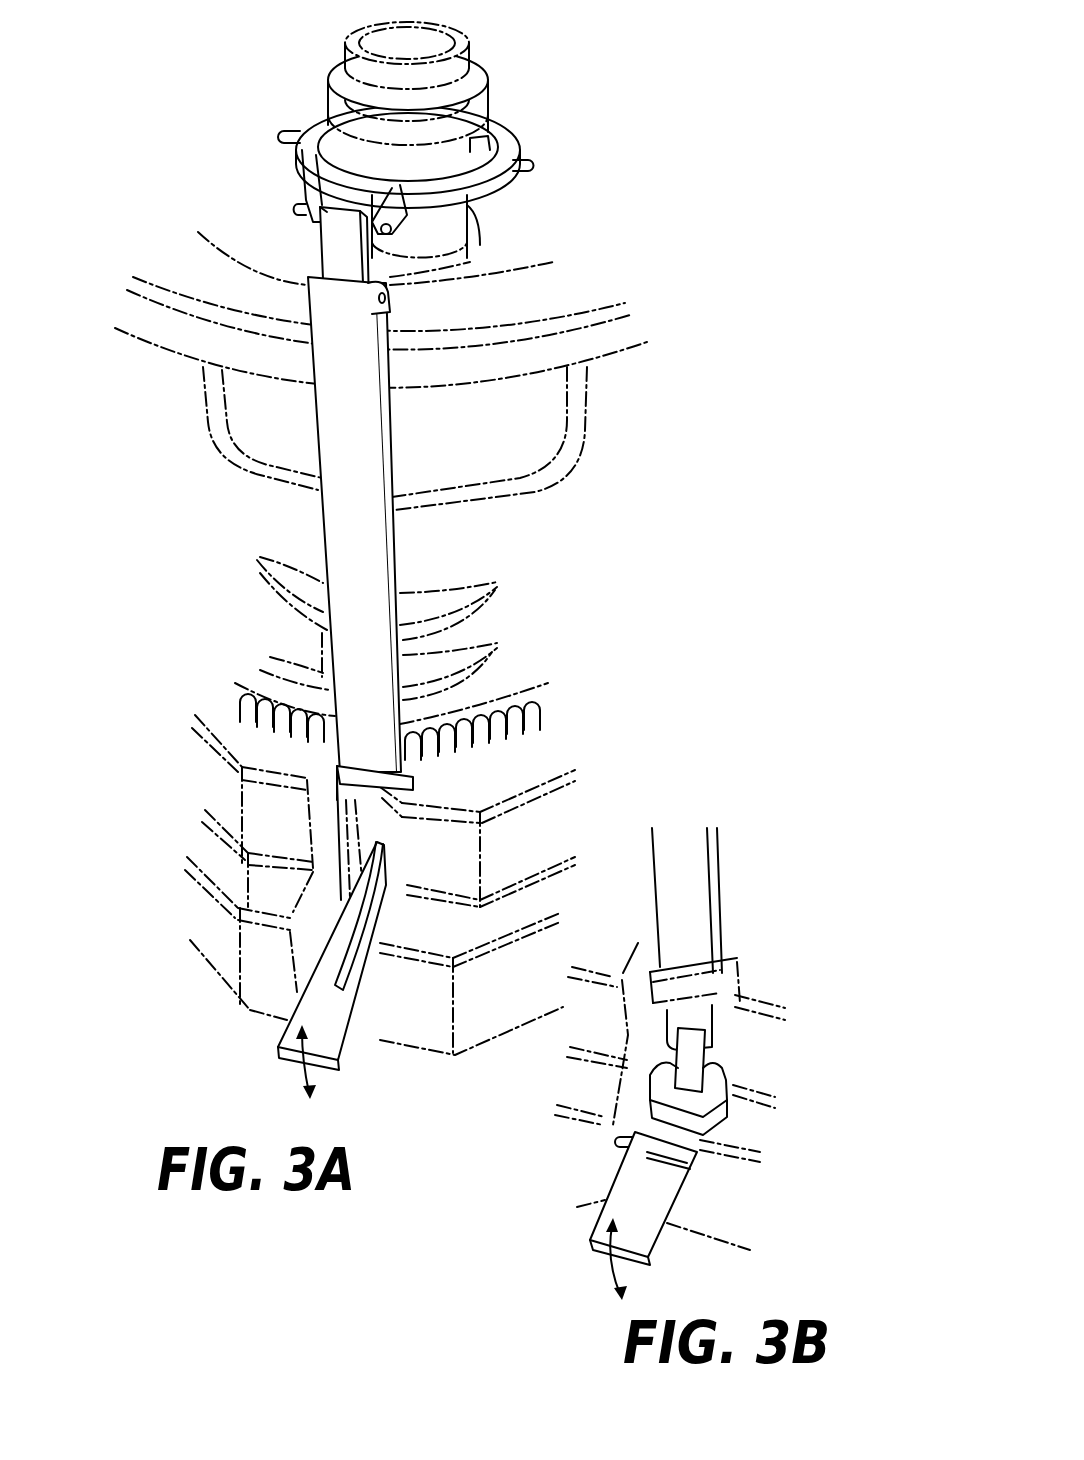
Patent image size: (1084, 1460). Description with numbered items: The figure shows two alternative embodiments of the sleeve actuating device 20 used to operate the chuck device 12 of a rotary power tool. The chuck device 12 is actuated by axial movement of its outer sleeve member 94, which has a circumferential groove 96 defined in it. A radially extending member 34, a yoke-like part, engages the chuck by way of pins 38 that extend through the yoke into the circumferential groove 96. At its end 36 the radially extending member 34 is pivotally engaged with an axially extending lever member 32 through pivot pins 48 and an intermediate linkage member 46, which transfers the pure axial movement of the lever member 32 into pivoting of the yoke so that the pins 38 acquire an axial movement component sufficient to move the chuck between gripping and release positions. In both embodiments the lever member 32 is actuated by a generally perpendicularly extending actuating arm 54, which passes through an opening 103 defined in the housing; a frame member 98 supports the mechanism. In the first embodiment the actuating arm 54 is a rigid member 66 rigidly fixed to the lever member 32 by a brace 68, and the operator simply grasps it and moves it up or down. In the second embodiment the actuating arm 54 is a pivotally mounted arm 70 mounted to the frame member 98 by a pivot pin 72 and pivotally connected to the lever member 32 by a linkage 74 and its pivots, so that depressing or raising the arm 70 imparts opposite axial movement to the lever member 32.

In FIG. 3A, the chuck device 12 is at (469, 50).
In FIG. 3A, the sleeve actuating device 20 is at (389, 164).
In FIG. 3A, the lever member 32 is at (375, 538).
In FIG. 3B, the lever member 32 is at (707, 902).
In FIG. 3A, the radially extending member 34 is at (490, 190).
In FIG. 3A, the end of radially extending member 36 is at (318, 193).
In FIG. 3A, the pins 38 is at (291, 130).
In FIG. 3A, the linkage member 46 is at (330, 250).
In FIG. 3A, the pivot pins 48 is at (296, 208).
In FIG. 3A, the actuating arm 54 is at (309, 965).
In FIG. 3B, the actuating arm 54 is at (608, 1182).
In FIG. 3A, the rigid member 66 is at (366, 965).
In FIG. 3A, the brace 68 is at (385, 880).
In FIG. 3B, the pivotally mounted arm 70 is at (650, 1228).
In FIG. 3B, the pivot pin 72 is at (614, 1140).
In FIG. 3B, the linkage 74 is at (705, 1065).
In FIG. 3A, the outer sleeve member 94 is at (488, 96).
In FIG. 3A, the circumferential groove 96 is at (498, 137).
In FIG. 3A, the frame member 98 is at (527, 707).
In FIG. 3A, the opening 103 is at (332, 912).